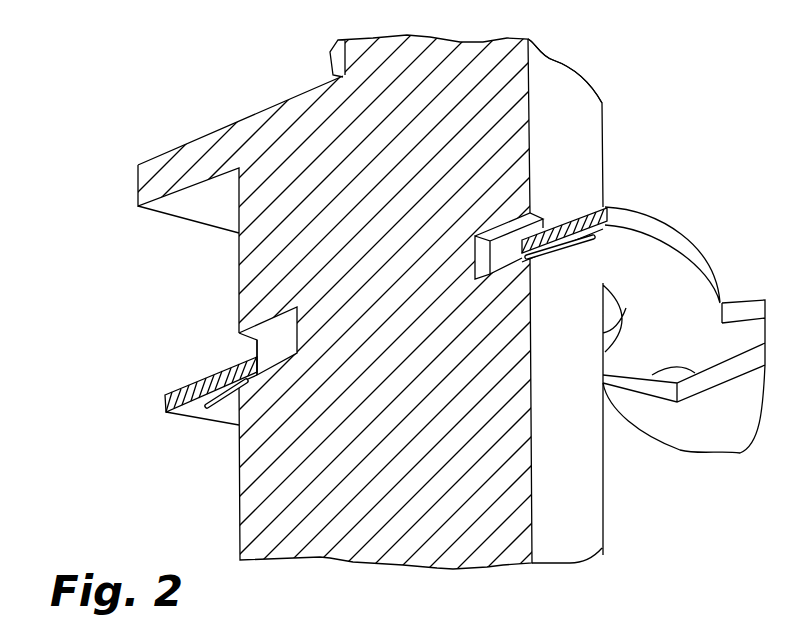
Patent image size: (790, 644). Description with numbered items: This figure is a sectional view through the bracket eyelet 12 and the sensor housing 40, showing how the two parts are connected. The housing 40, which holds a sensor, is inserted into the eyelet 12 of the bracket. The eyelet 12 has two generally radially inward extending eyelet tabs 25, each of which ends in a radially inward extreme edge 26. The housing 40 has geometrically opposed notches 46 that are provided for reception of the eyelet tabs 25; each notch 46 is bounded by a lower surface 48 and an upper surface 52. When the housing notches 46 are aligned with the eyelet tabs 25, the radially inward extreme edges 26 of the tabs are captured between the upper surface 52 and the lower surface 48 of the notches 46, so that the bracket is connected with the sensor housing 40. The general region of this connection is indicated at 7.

The fastening assembly 7 is at (667, 146).
The eyelet 12 is at (677, 228).
The eyelet tabs 25 is at (200, 373).
The radially inward extreme edge 26 is at (243, 363).
The housing 40 is at (602, 516).
The notches 46 is at (277, 343).
The lower surface 48 is at (293, 353).
The upper surface 52 is at (533, 217).